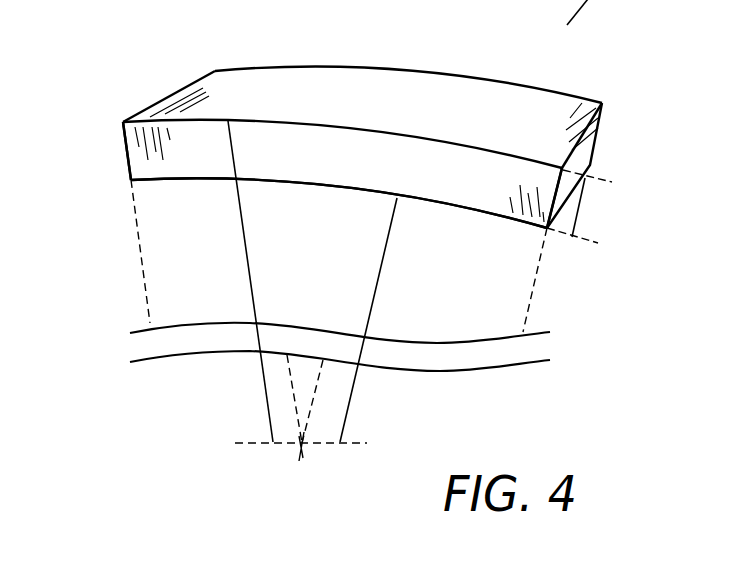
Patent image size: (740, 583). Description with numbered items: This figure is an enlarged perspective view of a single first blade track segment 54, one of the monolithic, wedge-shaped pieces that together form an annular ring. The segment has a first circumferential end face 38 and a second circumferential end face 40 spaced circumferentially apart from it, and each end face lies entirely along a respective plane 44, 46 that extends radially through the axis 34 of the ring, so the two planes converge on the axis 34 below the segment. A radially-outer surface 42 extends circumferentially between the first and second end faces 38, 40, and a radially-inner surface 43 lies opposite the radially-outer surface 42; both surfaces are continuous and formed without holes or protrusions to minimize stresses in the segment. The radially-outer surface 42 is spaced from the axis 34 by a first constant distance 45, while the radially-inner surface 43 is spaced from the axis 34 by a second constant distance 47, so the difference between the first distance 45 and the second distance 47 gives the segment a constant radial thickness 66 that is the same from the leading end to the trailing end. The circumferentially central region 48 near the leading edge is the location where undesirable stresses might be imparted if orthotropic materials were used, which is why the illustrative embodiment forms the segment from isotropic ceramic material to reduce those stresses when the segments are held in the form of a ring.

The axis 34 is at (302, 445).
The first circumferential end face 38 is at (122, 147).
The second circumferential end face 40 is at (582, 153).
The radially-outer surface 42 is at (488, 100).
The radially-inner surface 43 is at (475, 212).
The plane 44 is at (138, 245).
The first constant distance 45 is at (247, 267).
The plane 46 is at (538, 268).
The second constant distance 47 is at (380, 277).
The circumferentially central region 48 is at (355, 156).
The first blade track segment 54 is at (575, 68).
The radial thickness 66 is at (582, 207).